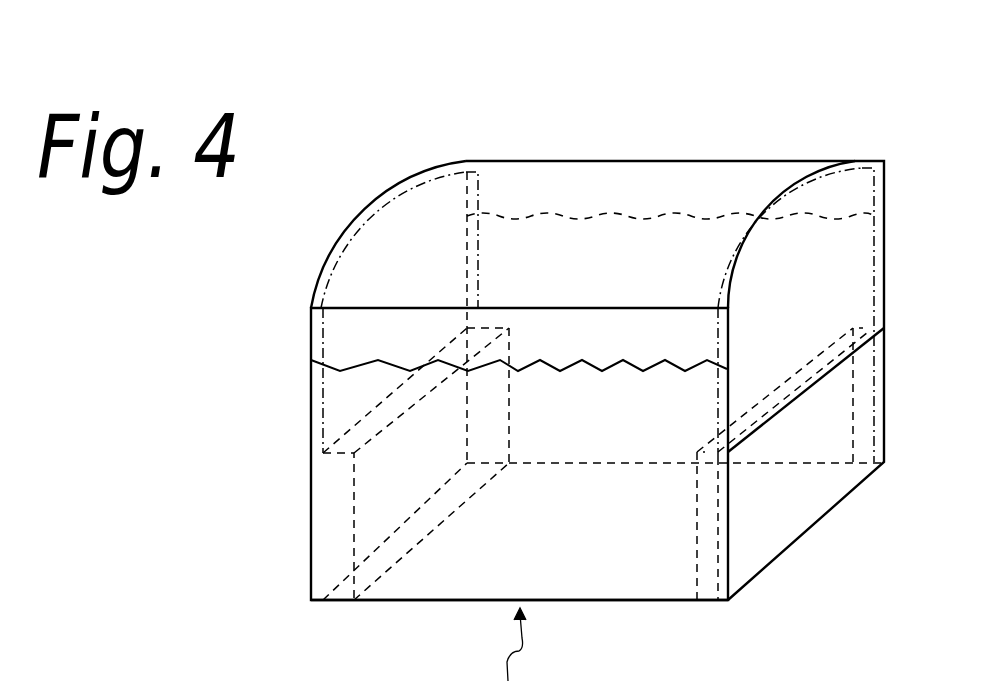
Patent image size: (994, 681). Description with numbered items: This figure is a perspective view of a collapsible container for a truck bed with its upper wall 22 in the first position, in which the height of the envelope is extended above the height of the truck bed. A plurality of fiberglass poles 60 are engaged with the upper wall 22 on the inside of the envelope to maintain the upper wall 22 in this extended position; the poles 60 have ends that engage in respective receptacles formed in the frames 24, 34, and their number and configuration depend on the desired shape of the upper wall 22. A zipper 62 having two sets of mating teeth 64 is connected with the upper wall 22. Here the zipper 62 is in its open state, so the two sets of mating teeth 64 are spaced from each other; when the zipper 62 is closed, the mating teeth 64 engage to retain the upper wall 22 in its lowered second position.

The upper wall 22 is at (628, 240).
The frame 24 is at (322, 498).
The frame 34 is at (707, 562).
The fiberglass poles 60 is at (360, 205).
The zipper 62 is at (519, 640).
The mating teeth 64 is at (378, 360).